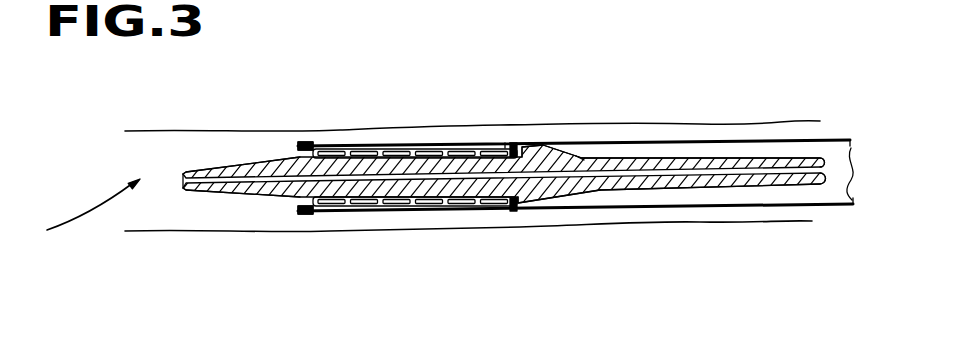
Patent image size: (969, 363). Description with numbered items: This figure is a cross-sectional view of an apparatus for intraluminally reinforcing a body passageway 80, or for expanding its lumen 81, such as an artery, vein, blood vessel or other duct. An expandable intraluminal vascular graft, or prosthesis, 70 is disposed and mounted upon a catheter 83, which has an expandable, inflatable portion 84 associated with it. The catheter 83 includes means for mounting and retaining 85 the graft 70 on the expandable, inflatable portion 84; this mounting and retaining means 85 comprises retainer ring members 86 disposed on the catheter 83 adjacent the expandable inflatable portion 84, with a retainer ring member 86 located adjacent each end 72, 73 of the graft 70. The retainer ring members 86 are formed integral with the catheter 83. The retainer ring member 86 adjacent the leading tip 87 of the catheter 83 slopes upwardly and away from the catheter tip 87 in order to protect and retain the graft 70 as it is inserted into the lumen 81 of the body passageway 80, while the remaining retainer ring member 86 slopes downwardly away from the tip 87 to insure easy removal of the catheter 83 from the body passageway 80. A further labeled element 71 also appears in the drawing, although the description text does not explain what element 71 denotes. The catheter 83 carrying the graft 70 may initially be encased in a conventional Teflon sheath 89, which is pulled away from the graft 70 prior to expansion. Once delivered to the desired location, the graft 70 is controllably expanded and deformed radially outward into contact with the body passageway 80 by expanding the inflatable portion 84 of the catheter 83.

The expandable intraluminal vascular graft 70 is at (362, 156).
The catheter body 71 is at (415, 157).
The end of graft 72 is at (322, 152).
The end of graft 73 is at (505, 143).
The body passageway 80 is at (196, 231).
The lumen 81 is at (76, 213).
The catheter 83 is at (617, 157).
The expandable inflatable portion 84 is at (540, 145).
The means for mounting and retaining 85 is at (304, 147).
The retainer ring member 86 is at (298, 147).
The leading tip 87 is at (184, 183).
The sheath 89 is at (758, 140).